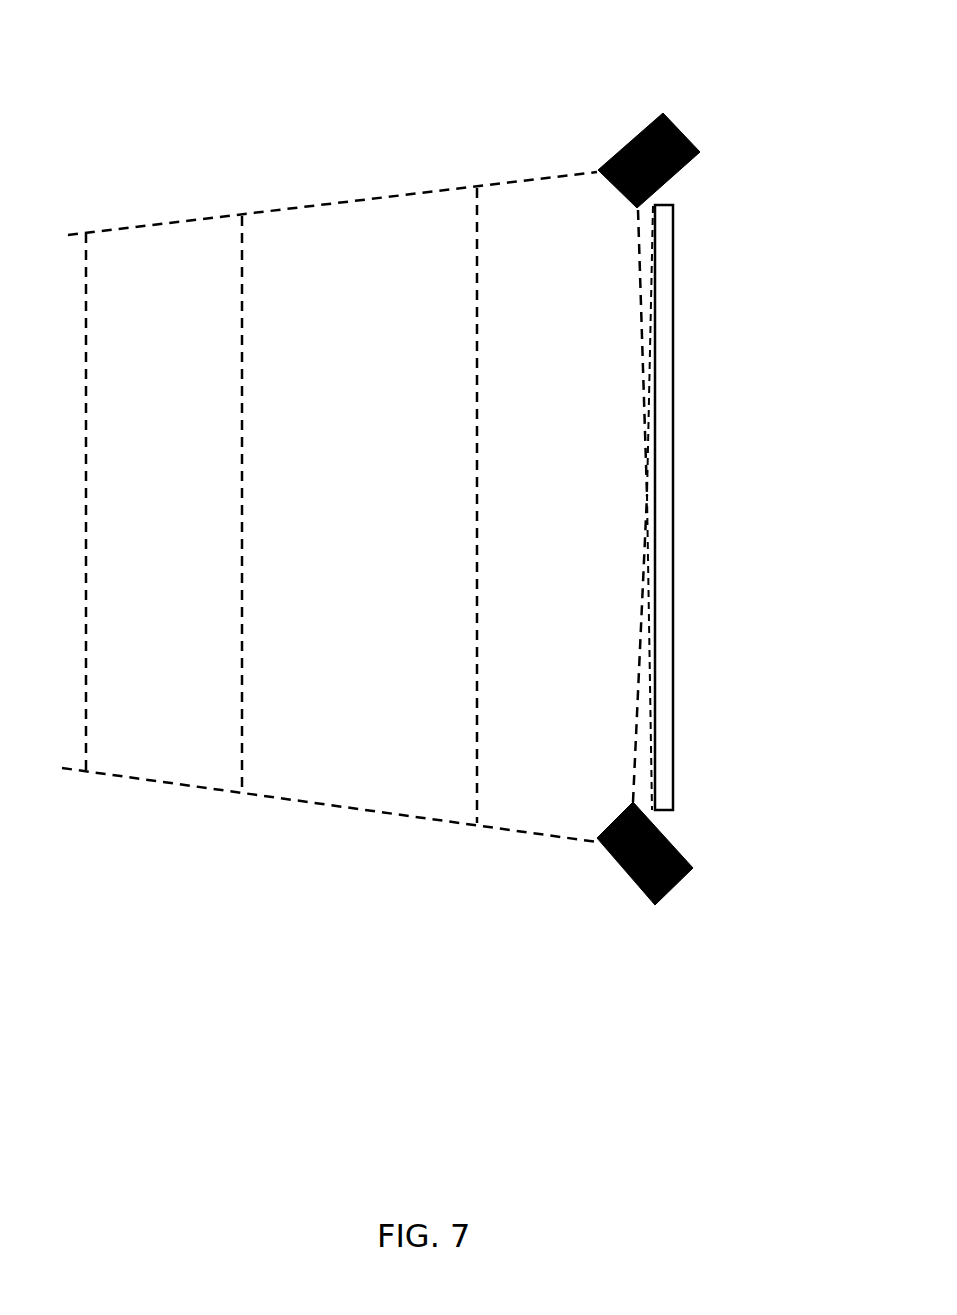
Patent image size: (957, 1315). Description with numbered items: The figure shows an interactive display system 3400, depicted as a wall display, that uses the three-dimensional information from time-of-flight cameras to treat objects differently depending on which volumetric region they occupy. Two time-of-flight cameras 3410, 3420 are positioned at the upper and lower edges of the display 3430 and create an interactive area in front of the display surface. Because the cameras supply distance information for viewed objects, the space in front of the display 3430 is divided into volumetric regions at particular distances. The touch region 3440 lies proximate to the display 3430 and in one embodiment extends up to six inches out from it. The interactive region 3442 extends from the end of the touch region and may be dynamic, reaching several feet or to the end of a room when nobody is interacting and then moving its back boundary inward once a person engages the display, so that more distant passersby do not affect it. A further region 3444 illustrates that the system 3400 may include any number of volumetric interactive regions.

The interactive display system 3400 is at (81, 37).
The time-of-flight camera 3410 is at (767, 122).
The time-of-flight camera 3420 is at (785, 876).
The display 3430 is at (680, 530).
The touch region 3440 is at (591, 506).
The interactive region 3442 is at (386, 506).
The additional volumetric interactive region 3444 is at (189, 506).